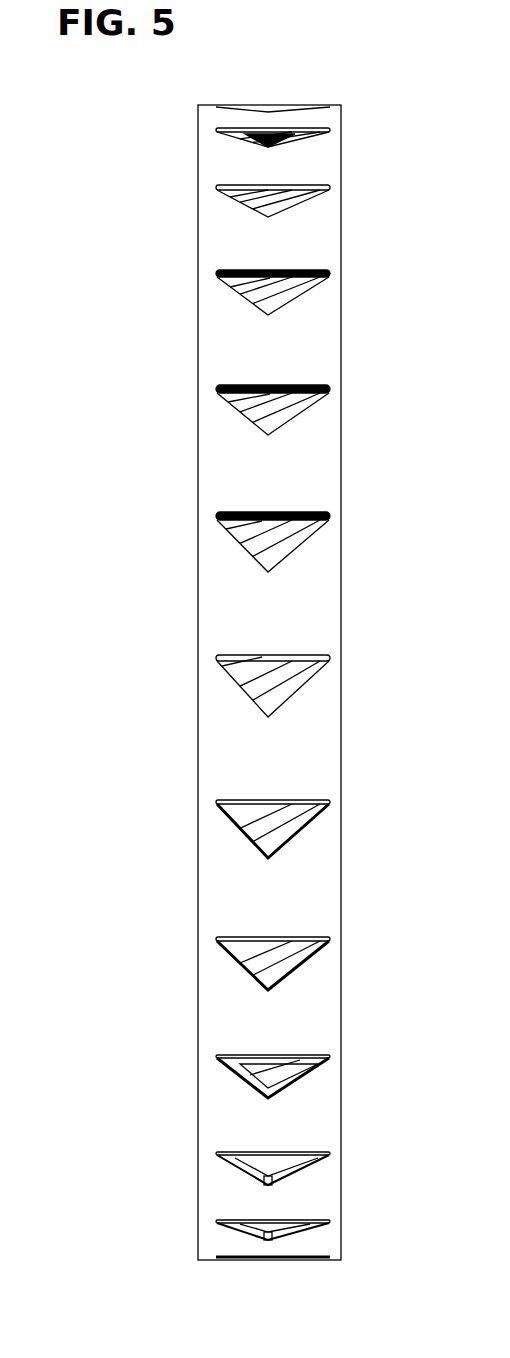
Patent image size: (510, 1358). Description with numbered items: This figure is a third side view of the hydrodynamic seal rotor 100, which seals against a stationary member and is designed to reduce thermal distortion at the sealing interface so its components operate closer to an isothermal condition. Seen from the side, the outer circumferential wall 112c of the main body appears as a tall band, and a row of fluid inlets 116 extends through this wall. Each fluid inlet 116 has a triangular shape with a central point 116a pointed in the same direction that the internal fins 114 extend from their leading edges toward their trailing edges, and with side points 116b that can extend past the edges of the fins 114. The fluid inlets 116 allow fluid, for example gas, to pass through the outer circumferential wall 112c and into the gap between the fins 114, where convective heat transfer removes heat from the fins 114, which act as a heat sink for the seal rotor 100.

The seal rotor 100 is at (143, 182).
The outer circumferential wall 112c is at (306, 340).
The internal fins 114 is at (222, 387).
The fluid inlets 116 is at (226, 573).
The central point 116a is at (278, 578).
The side points 116b is at (216, 516).